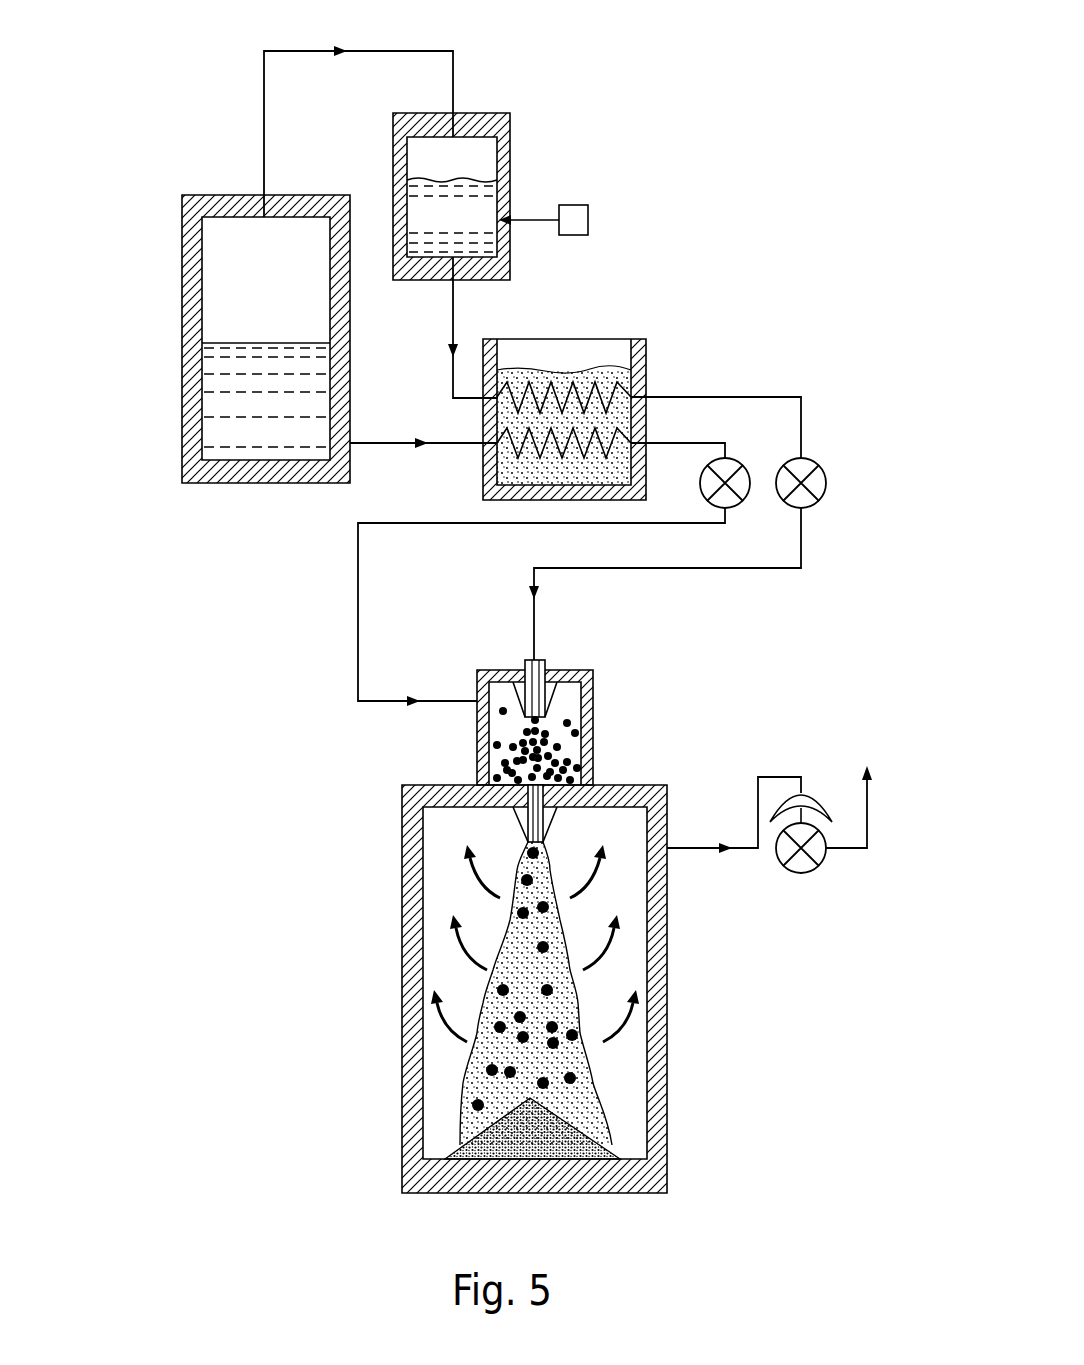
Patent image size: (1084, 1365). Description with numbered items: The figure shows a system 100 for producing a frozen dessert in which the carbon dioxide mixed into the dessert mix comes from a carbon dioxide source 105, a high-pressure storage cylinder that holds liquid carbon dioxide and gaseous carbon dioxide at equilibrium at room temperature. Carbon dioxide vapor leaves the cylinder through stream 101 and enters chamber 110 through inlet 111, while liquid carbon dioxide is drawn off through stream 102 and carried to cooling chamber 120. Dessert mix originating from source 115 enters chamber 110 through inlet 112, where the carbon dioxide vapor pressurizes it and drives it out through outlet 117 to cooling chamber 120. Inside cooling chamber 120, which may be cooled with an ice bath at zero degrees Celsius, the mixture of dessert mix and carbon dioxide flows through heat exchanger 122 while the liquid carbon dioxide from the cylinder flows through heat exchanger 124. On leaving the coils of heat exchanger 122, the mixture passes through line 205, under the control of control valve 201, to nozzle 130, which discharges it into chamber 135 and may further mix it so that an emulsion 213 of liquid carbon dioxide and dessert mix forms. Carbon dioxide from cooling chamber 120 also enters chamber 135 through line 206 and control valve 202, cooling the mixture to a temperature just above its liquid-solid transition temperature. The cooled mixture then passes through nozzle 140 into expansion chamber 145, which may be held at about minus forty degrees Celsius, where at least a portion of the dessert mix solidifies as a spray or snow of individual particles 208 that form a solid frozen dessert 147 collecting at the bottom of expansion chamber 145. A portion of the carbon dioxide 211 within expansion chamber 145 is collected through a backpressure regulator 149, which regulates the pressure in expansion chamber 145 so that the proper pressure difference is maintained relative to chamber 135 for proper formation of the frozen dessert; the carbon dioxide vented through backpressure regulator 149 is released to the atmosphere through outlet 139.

The system 100 is at (672, 128).
The stream 101 is at (378, 51).
The stream 102 is at (406, 447).
The carbon dioxide source 105 is at (182, 240).
The chamber 110 is at (510, 170).
The inlet 111 is at (453, 108).
The inlet 112 is at (510, 226).
The source 115 is at (572, 205).
The outlet 117 is at (450, 283).
The cooling chamber 120 is at (646, 432).
The heat exchanger 122 is at (566, 382).
The heat exchanger 124 is at (500, 467).
The nozzle 130 is at (568, 690).
The chamber 135 is at (604, 723).
The outlet 139 is at (860, 800).
The nozzle 140 is at (503, 826).
The expansion chamber 145 is at (402, 860).
The solid frozen dessert 147 is at (460, 1137).
The backpressure regulator 149 is at (823, 859).
The control valve 201 is at (811, 466).
The control valve 202 is at (737, 470).
The line 205 is at (795, 397).
The line 206 is at (716, 443).
The individual particles 208 is at (500, 915).
The carbon dioxide 211 is at (447, 1027).
The emulsion 213 is at (498, 755).